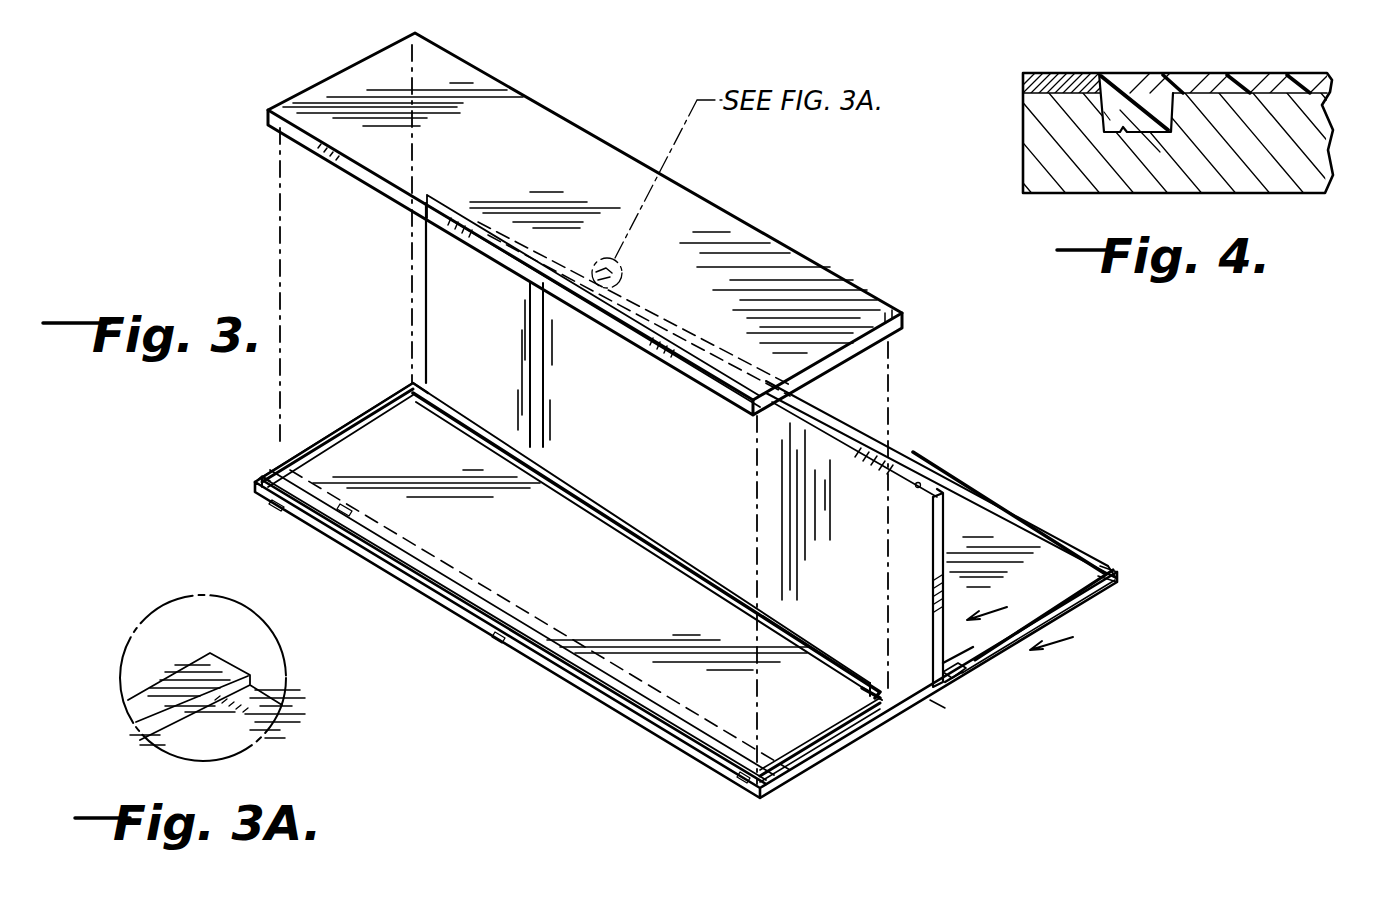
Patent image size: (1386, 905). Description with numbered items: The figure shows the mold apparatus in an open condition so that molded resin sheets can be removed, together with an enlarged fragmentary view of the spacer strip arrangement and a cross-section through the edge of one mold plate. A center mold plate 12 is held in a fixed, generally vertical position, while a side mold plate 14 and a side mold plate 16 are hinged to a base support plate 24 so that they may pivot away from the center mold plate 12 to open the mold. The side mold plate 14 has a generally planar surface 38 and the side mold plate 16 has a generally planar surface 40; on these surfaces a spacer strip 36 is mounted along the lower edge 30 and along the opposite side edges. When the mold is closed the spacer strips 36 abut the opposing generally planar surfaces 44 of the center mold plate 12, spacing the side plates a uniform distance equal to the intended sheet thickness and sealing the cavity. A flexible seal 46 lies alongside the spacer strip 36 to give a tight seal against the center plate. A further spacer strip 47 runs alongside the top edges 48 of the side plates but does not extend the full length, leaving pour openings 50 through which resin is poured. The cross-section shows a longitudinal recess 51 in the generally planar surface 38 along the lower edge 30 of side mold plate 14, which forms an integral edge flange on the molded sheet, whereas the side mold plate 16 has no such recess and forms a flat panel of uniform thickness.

In FIG. 3, the center mold plate 12 is at (965, 660).
In FIG. 3, the side mold plate 14 is at (790, 772).
In FIG. 4, the side mold plate 14 is at (1297, 138).
In FIG. 3, the side mold plate 16 is at (1097, 598).
In FIG. 3, the base support plate 24 is at (940, 717).
In FIG. 3, the lower edge 30 is at (822, 640).
In FIG. 3, the spacer strip 36 is at (262, 478).
In FIG. 3A, the spacer strip 36 is at (182, 672).
In FIG. 4, the spacer strip 36 is at (1055, 75).
In FIG. 3, the generally planar surface 38 is at (585, 595).
In FIG. 4, the generally planar surface 38 is at (1225, 82).
In FIG. 3, the generally planar surface 40 is at (1082, 590).
In FIG. 3A, the generally planar surface 40 is at (215, 757).
In FIG. 3, the generally planar surface 44 is at (690, 455).
In FIG. 3, the flexible seal 46 is at (352, 430).
In FIG. 3A, the flexible seal 46 is at (238, 672).
In FIG. 4, the flexible seal 46 is at (1093, 78).
In FIG. 3, the spacer strip 47 is at (418, 578).
In FIG. 3, the top edge 48 is at (670, 742).
In FIG. 3, the pour opening 50 is at (850, 405).
In FIG. 3, the recess 51 is at (877, 698).
In FIG. 4, the recess 51 is at (1150, 105).